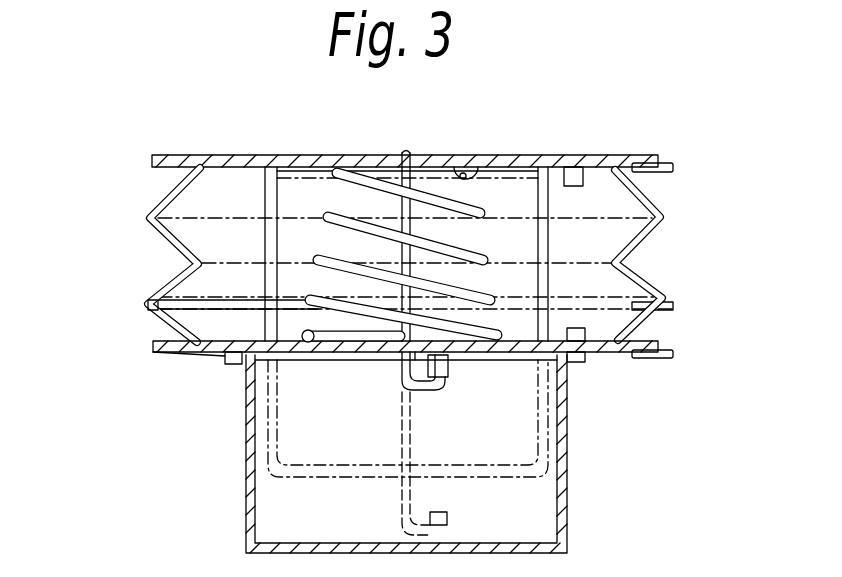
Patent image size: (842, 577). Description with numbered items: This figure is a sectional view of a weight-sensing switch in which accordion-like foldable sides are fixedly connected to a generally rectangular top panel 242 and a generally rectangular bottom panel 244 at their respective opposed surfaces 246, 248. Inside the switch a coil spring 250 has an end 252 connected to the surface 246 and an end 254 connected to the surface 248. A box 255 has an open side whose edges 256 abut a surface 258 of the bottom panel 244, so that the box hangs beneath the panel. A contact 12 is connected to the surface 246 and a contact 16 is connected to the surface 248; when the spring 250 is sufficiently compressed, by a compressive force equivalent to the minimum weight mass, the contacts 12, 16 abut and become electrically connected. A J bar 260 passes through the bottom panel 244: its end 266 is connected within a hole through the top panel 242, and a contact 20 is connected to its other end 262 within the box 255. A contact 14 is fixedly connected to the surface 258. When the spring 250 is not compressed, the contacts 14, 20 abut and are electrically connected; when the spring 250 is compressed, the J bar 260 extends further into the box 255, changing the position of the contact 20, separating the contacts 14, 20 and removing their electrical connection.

The contact 12 is at (594, 174).
The contact 14 is at (442, 357).
The contact 16 is at (620, 352).
The contact 20 is at (447, 377).
The top panel 242 is at (152, 157).
The bottom panel 244 is at (152, 349).
The surface 246 is at (162, 172).
The surface 248 is at (165, 338).
The coil spring 250 is at (333, 214).
The end 252 is at (487, 168).
The end 254 is at (312, 343).
The box 255 is at (225, 453).
The edges 256 is at (233, 362).
The surface 258 is at (163, 357).
The J bar 260 is at (404, 158).
The end 262 is at (440, 392).
The end 266 is at (418, 167).